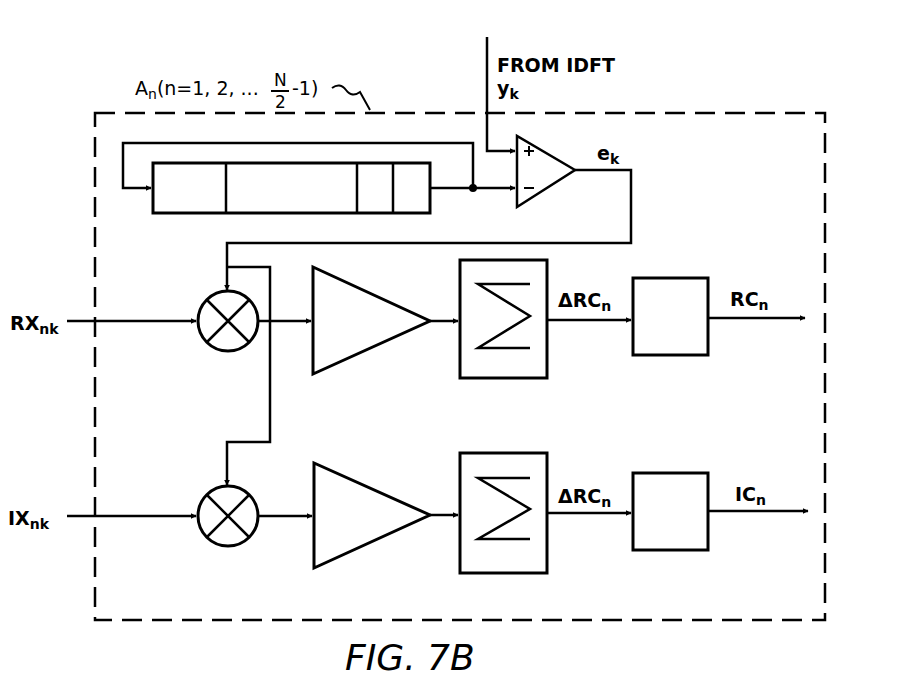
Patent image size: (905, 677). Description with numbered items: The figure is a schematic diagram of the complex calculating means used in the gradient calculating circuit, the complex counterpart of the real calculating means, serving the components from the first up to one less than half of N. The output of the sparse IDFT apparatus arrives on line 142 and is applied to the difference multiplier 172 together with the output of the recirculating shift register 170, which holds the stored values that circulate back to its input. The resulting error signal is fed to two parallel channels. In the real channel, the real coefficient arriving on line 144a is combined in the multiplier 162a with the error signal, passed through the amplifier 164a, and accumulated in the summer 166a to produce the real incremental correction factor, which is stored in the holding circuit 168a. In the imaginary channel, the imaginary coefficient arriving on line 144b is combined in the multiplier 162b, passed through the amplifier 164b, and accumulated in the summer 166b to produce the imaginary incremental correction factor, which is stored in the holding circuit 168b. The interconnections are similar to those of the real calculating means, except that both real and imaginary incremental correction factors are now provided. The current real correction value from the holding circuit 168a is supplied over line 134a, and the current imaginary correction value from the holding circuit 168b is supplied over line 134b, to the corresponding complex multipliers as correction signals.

The line 142 is at (488, 127).
The recirculating shift register 170 is at (297, 214).
The difference multiplier 172 is at (560, 178).
The line 144a is at (108, 321).
The multiplier 162a is at (204, 339).
The amplifier 164a is at (383, 293).
The summer 166a is at (547, 350).
The holding circuit 168a is at (643, 280).
The line 134a is at (732, 320).
The line 144b is at (172, 515).
The multiplier 162b is at (210, 545).
The amplifier 164b is at (395, 476).
The summer 166b is at (492, 575).
The holding circuit 168b is at (668, 473).
The line 134b is at (760, 513).